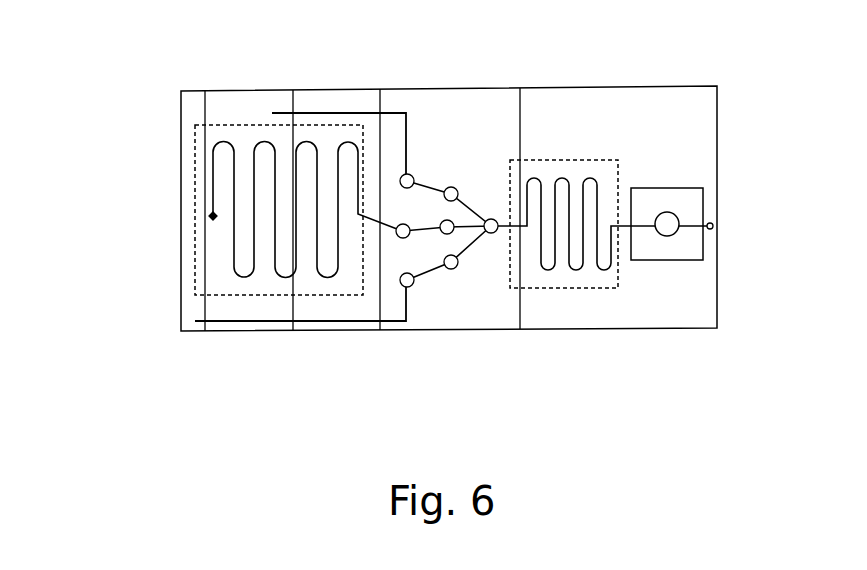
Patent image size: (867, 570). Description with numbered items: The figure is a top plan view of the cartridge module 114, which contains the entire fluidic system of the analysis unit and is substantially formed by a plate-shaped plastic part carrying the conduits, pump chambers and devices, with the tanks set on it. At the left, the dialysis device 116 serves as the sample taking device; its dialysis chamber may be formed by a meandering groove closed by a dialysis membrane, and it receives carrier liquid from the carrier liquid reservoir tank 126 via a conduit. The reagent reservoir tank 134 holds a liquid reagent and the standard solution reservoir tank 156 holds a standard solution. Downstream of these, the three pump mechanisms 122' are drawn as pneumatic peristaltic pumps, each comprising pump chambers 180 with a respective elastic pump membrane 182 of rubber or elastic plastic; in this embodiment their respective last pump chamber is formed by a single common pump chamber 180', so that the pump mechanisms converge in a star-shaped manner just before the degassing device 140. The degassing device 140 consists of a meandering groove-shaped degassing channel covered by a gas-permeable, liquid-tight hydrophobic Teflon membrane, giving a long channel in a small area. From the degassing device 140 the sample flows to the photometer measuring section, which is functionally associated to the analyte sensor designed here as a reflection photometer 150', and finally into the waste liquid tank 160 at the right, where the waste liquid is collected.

The cartridge module 114 is at (142, 190).
The dialysis device 116 is at (178, 225).
The carrier liquid reservoir tank 126 is at (240, 325).
The reagent reservoir tank 134 is at (335, 328).
The standard solution reservoir tank 156 is at (192, 313).
The pump mechanisms 122' is at (482, 156).
The pump chambers 180 is at (386, 159).
The pump membrane 182 is at (450, 187).
The common pump chamber 180' is at (488, 305).
The degassing device 140 is at (578, 295).
The reflection photometer 150' is at (680, 180).
The waste liquid tank 160 is at (697, 283).